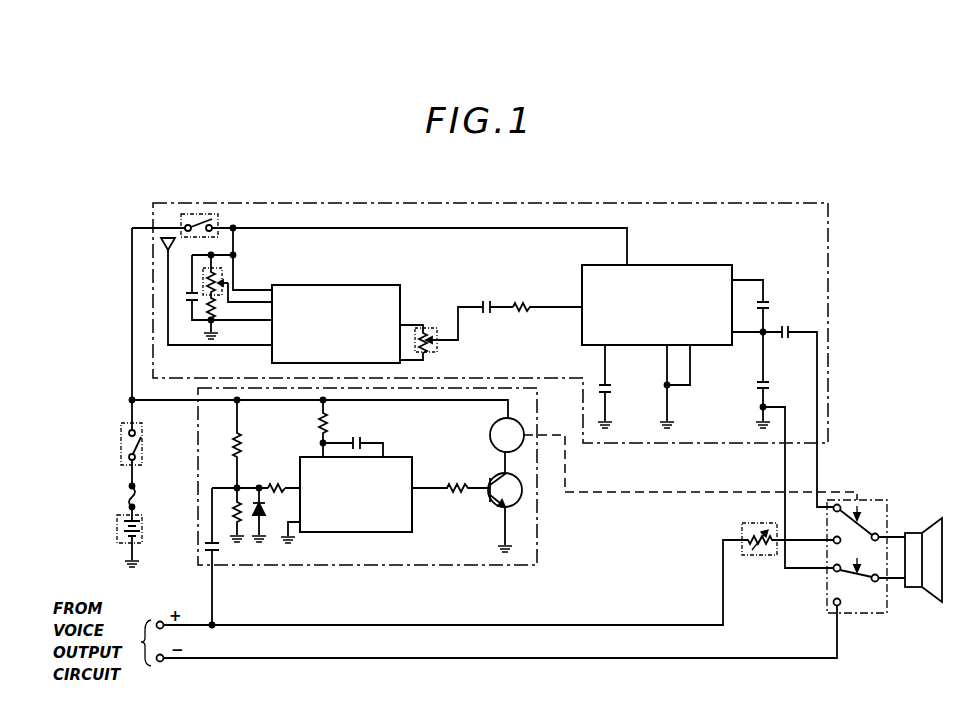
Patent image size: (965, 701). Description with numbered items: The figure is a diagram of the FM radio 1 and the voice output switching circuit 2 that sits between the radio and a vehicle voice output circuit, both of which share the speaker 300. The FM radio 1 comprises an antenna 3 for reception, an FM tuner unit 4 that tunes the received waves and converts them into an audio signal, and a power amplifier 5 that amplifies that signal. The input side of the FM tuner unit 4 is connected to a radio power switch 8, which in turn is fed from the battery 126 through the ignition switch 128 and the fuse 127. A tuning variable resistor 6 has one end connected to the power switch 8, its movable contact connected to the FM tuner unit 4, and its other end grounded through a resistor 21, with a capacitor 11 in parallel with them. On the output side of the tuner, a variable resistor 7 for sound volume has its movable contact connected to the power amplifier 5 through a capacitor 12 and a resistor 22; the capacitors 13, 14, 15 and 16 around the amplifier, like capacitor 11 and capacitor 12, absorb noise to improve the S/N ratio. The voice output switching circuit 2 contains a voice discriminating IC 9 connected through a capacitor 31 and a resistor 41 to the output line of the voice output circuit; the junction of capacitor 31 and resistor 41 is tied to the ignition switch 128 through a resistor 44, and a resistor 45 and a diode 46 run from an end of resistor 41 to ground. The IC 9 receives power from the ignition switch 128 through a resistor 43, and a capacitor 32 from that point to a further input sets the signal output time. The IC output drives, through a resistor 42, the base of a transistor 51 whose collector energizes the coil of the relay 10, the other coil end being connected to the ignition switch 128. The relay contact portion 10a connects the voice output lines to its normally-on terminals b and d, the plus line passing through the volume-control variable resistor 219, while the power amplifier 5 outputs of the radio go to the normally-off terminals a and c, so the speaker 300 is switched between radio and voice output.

The FM radio 1 is at (742, 203).
The voice output switching circuit 2 is at (540, 553).
The antenna 3 is at (162, 247).
The FM tuner unit 4 is at (376, 285).
The power amplifier 5 is at (698, 265).
The tuning variable resistor 6 is at (222, 280).
The variable resistor for sound volume adjustment 7 is at (437, 350).
The radio power switch 8 is at (212, 218).
The voice discriminating IC 9 is at (412, 486).
The relay RY1 10 is at (490, 432).
The contact portion 10a is at (534, 579).
The capacitor 11 is at (190, 301).
The capacitor 12 is at (486, 300).
The capacitor 13 is at (610, 385).
The capacitor 14 is at (770, 300).
The capacitor 15 is at (770, 383).
The capacitor 16 is at (790, 326).
The resistor 21 is at (215, 306).
The resistor 22 is at (522, 300).
The capacitor 31 is at (207, 548).
The capacitor 32 is at (365, 441).
The resistor 41 is at (276, 485).
The resistor 42 is at (455, 492).
The resistor 43 is at (328, 428).
The resistor 44 is at (242, 442).
The resistor 45 is at (236, 504).
The diode 46 is at (263, 516).
The transistor 51 is at (523, 497).
The battery 126 is at (143, 522).
The fuse 127 is at (140, 495).
The ignition switch 128 is at (143, 433).
The variable resistor 219 is at (742, 530).
The speaker 300 is at (928, 596).
The normally-off terminal a is at (832, 511).
The normally-on terminal b is at (832, 543).
The normally-off terminal c is at (832, 572).
The normally-on terminal d is at (836, 607).